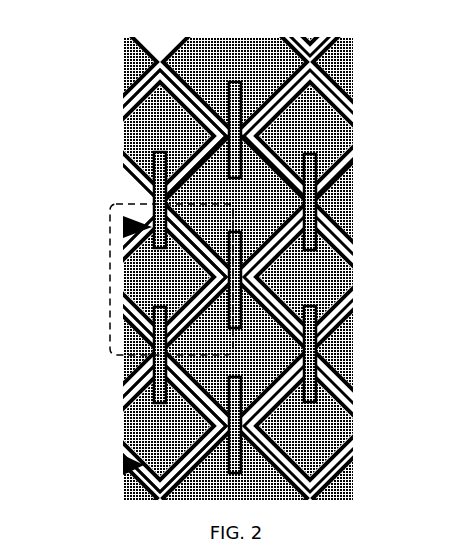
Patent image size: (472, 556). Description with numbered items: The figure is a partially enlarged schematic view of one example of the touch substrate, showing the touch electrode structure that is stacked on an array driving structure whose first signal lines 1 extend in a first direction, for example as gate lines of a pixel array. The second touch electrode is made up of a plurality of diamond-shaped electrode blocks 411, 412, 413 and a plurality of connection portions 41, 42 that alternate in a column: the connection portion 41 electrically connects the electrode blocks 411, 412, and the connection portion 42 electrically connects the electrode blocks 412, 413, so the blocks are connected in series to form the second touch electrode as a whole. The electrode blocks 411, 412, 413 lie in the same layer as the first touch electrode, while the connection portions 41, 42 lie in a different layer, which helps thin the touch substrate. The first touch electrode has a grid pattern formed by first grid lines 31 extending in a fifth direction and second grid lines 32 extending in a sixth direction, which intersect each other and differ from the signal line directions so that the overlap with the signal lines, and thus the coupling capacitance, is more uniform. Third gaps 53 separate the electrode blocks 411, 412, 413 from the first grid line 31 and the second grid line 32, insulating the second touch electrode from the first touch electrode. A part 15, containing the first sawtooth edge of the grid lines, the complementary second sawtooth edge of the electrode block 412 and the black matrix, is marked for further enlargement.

The first signal line 1 is at (118, 206).
The part including the first sawtooth edge 15 is at (233, 352).
The first grid line 31 is at (146, 352).
The second grid line 32 is at (207, 453).
The connection portion 41 is at (156, 190).
The connection portion 42 is at (154, 318).
The third gap 53 is at (173, 82).
The electrode block 411 is at (160, 105).
The electrode block 412 is at (150, 275).
The electrode block 413 is at (157, 443).